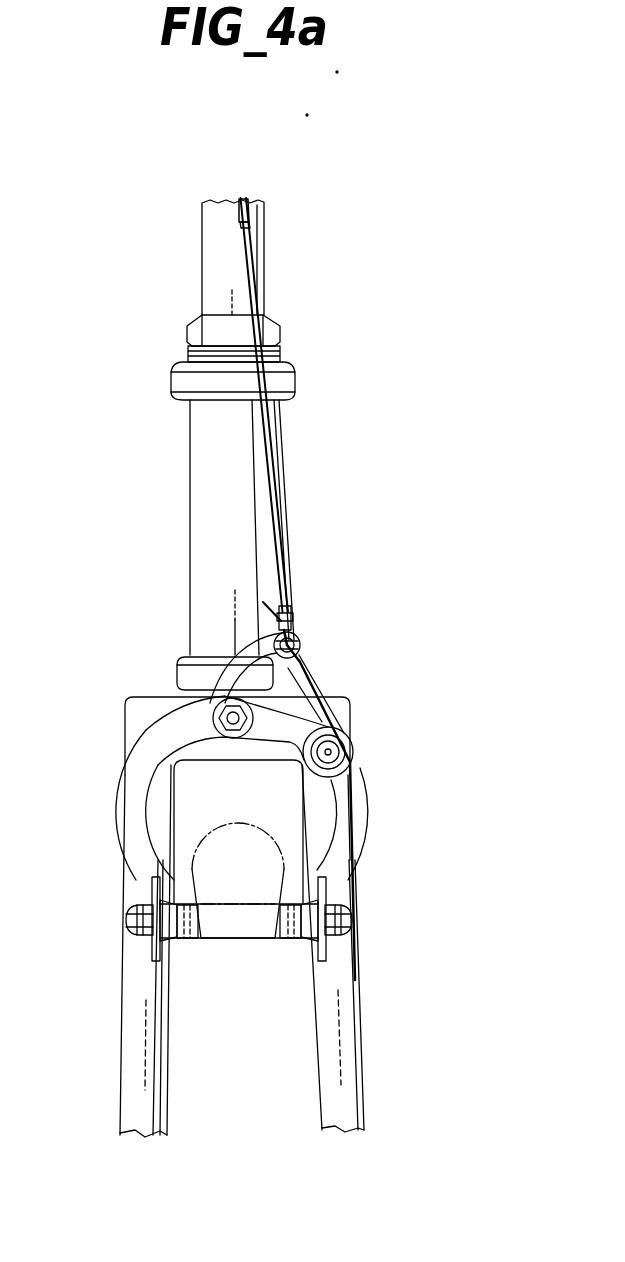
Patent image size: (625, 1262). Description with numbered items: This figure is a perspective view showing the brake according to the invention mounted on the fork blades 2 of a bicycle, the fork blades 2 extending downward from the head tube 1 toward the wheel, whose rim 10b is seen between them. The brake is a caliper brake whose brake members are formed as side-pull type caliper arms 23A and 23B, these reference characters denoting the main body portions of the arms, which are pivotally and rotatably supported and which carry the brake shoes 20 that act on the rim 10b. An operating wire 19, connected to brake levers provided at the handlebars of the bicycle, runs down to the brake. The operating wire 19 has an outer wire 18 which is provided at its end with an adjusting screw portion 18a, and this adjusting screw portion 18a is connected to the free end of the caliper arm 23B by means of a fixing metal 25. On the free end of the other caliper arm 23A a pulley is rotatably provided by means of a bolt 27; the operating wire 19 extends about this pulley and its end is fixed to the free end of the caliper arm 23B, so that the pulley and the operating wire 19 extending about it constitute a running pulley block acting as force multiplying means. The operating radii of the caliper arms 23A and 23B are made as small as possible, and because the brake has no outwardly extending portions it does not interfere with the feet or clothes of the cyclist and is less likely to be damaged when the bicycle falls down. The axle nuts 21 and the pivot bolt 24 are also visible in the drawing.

The head tube 1 is at (196, 490).
The fork blades 2 is at (133, 1015).
The rim 10b is at (238, 940).
The outer wire 18 is at (283, 546).
The adjusting screw portion 18a is at (303, 622).
The operating wire 19 is at (247, 196).
The brake shoes 20 is at (196, 940).
The axle nut 21 is at (130, 918).
The caliper arm 23A is at (116, 827).
The caliper arm 23B is at (370, 806).
The pivot bolt 24 is at (188, 708).
The fixing metal 25 is at (305, 648).
The bolt 27 is at (332, 752).